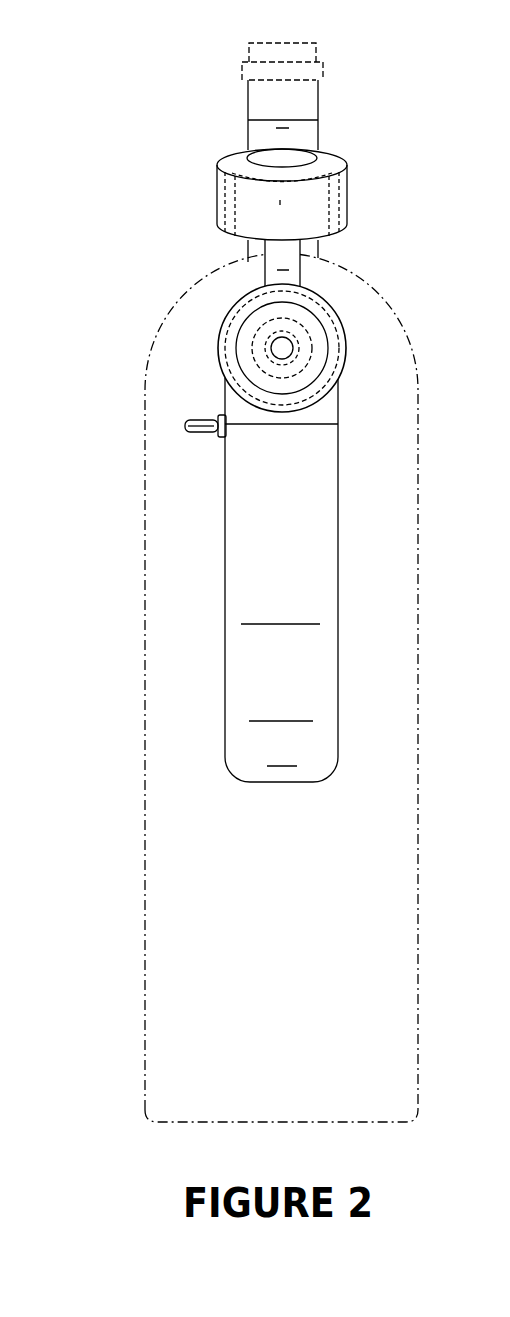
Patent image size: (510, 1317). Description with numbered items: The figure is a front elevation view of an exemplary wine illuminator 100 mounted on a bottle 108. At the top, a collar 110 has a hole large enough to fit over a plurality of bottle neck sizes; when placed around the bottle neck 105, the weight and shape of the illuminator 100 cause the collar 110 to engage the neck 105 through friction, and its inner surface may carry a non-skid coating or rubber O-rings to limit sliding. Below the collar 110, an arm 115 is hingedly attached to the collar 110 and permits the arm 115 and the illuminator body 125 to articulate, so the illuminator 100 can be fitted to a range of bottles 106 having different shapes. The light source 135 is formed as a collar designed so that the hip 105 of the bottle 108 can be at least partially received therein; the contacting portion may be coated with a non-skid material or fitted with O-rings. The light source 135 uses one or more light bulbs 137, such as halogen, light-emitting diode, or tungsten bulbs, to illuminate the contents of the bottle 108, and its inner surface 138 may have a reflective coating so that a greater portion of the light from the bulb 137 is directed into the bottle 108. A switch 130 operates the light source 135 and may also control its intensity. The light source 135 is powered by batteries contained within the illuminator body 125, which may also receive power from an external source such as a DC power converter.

The wine illuminator 100 is at (112, 78).
The bottle neck 105 is at (247, 108).
The bottle 106 is at (145, 335).
The bottle 108 is at (387, 528).
The collar 110 is at (217, 195).
The arm 115 is at (268, 265).
The illuminator body 125 is at (226, 691).
The switch 130 is at (182, 423).
The light source 135 is at (352, 358).
The light bulb 137 is at (293, 361).
The inner surface 138 is at (288, 388).